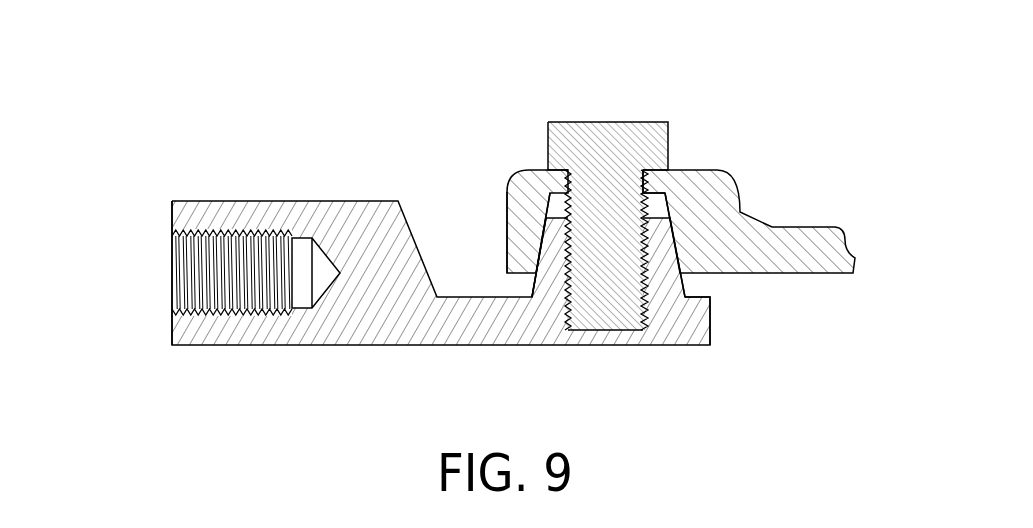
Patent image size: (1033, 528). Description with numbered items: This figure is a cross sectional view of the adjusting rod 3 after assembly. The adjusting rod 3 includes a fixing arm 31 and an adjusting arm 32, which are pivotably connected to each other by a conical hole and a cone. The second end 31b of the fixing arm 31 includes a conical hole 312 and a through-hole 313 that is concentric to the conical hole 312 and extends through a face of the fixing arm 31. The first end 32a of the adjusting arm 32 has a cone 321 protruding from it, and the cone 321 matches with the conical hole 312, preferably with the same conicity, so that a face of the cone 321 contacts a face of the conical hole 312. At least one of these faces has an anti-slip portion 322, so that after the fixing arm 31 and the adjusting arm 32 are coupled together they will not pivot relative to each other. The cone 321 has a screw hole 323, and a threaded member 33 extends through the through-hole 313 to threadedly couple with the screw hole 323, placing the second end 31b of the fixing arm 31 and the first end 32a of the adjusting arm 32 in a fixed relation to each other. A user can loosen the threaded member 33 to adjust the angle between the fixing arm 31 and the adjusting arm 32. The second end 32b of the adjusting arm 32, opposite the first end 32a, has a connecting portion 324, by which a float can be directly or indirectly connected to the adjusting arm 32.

The adjusting rod 3 is at (483, 229).
The fixing arm 31 is at (818, 240).
The second end of the fixing arm 31b is at (507, 229).
The conical hole 312 is at (538, 258).
The through-hole 313 is at (650, 172).
The adjusting arm 32 is at (323, 335).
The first end of the adjusting arm 32a is at (710, 327).
The second end of the adjusting arm 32b is at (172, 217).
The cone 321 is at (539, 257).
The anti-slip portion 322 is at (673, 240).
The screw hole 323 is at (643, 303).
The connecting portion 324 is at (176, 305).
The threaded member 33 is at (607, 123).